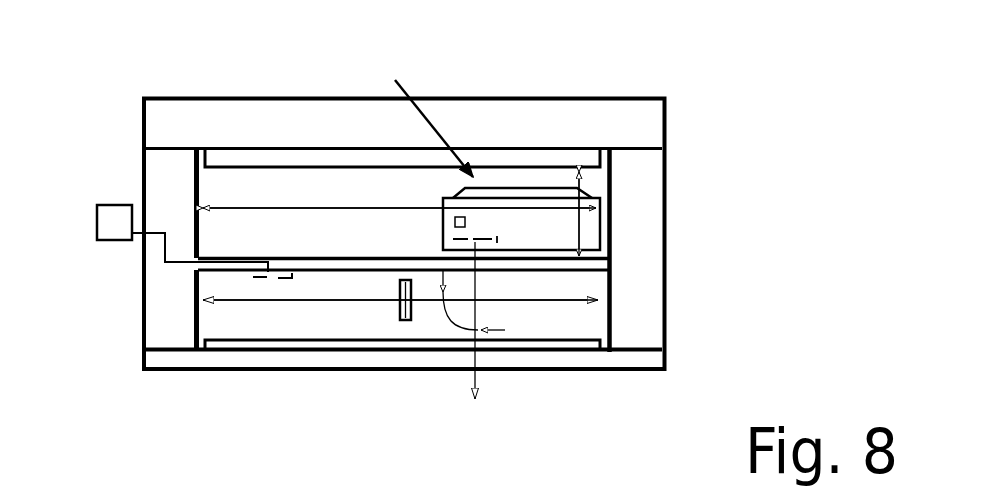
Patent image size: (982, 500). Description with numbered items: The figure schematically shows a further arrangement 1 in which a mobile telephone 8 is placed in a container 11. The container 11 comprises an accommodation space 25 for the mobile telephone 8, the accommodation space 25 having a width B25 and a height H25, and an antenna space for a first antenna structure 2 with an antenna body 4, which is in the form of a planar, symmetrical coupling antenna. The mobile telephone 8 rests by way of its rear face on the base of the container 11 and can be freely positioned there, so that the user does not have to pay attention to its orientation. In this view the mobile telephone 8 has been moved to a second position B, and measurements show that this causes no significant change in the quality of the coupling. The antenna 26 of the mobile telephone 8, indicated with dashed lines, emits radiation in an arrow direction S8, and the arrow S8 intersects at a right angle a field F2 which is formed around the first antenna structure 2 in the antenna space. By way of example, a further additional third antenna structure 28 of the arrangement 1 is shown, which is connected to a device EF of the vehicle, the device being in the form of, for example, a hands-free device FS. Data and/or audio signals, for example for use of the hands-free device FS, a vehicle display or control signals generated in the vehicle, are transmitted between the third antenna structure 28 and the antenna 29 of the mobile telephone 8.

The arrangement 1 is at (697, 88).
The container 11 is at (706, 143).
The accommodation space 25 is at (233, 180).
The width of the accommodation space B25 is at (282, 207).
The height of the accommodation space H25 is at (580, 228).
The mobile telephone 8 is at (548, 222).
The antenna of the mobile telephone 29 is at (455, 220).
The antenna of the mobile telephone 26 is at (464, 240).
The second position B is at (426, 114).
The third antenna structure 28 is at (253, 272).
The device of the vehicle EF is at (87, 188).
The hands-free device FS is at (113, 223).
The arrow direction S8 is at (478, 382).
The field F2 is at (567, 302).
The first antenna structure 2 is at (361, 352).
The antenna body 4 is at (401, 313).